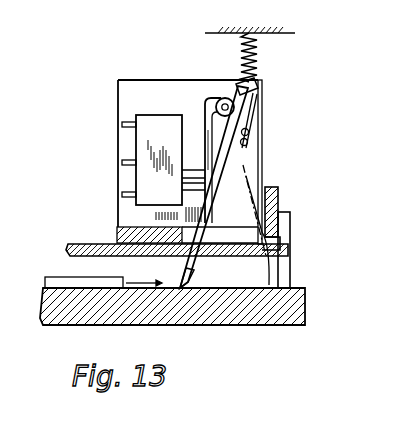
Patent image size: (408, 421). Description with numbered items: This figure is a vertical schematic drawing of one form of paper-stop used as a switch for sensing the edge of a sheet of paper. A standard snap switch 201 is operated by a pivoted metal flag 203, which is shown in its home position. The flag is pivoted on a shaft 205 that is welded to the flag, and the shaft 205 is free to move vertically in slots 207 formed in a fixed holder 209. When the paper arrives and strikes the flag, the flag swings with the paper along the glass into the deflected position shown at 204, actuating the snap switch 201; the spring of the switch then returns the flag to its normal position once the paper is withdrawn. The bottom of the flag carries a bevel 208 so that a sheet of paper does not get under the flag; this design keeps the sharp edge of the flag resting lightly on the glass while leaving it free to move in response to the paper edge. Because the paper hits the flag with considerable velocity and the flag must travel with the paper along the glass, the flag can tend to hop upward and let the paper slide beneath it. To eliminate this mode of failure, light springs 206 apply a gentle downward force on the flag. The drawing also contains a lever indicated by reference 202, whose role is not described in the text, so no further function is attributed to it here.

The standard snap switch 201 is at (146, 142).
The pivoted lever arm 202 is at (215, 186).
The pivoted metal flag 203 is at (193, 268).
The deflected position of flag 204 is at (283, 270).
The shaft 205 is at (246, 136).
The springs 206 is at (242, 57).
The slots 207 is at (249, 153).
The bevel 208 is at (170, 301).
The fixed holder 209 is at (128, 85).